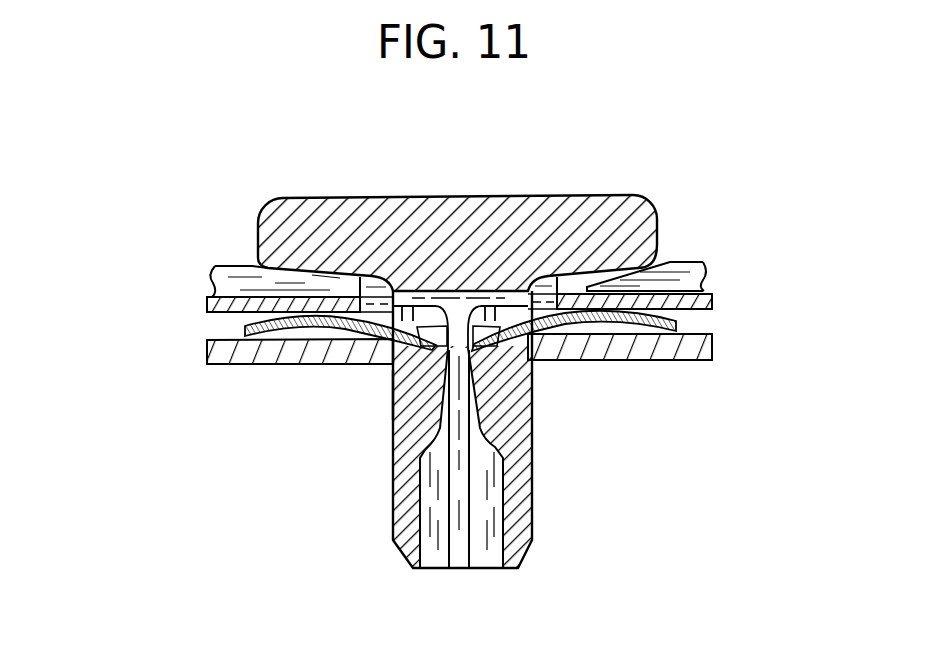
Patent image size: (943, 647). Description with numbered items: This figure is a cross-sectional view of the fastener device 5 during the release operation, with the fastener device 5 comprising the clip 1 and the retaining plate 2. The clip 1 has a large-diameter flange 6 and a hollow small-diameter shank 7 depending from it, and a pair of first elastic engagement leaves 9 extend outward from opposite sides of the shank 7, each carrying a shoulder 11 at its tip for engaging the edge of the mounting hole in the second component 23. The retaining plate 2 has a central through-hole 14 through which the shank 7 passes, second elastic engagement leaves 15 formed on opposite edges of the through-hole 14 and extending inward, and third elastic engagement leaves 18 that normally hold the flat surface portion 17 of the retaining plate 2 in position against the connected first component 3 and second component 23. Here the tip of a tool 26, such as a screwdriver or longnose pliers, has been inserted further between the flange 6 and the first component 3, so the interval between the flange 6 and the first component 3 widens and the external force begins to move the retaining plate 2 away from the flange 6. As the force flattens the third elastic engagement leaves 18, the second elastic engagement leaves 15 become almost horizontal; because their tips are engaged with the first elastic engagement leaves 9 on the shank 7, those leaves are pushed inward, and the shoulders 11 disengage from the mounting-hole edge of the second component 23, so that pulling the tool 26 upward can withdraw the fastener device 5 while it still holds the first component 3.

The clip 1 is at (501, 338).
The retaining plate 2 is at (682, 322).
The first component 3 is at (210, 303).
The fastener device 5 is at (477, 340).
The flange 6 is at (277, 217).
The shank 7 is at (397, 507).
The first elastic engagement leaves 9 is at (392, 410).
The shoulder 11 is at (360, 350).
The through-hole 14 is at (390, 394).
The second elastic engagement leaves 15 is at (428, 327).
The flat surface portion 17 is at (343, 291).
The third elastic engagement leaves 18 is at (237, 330).
The second component 23 is at (220, 365).
The tool 26 is at (243, 278).